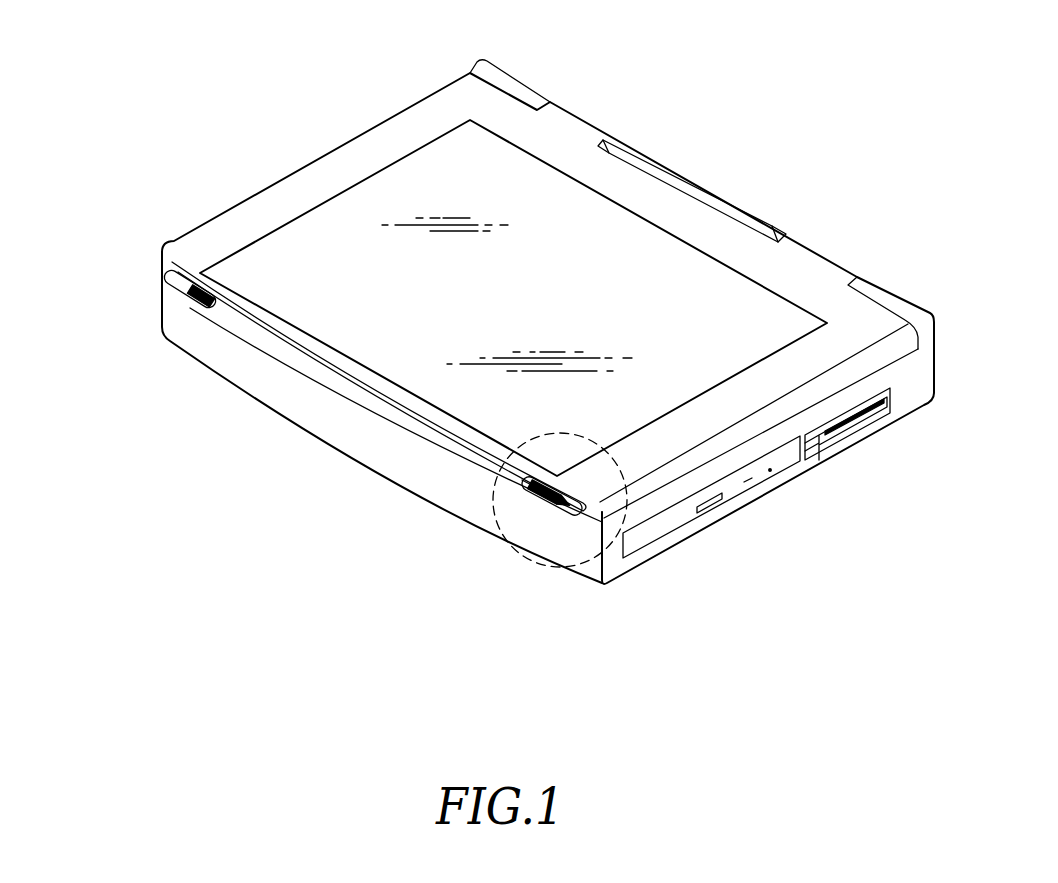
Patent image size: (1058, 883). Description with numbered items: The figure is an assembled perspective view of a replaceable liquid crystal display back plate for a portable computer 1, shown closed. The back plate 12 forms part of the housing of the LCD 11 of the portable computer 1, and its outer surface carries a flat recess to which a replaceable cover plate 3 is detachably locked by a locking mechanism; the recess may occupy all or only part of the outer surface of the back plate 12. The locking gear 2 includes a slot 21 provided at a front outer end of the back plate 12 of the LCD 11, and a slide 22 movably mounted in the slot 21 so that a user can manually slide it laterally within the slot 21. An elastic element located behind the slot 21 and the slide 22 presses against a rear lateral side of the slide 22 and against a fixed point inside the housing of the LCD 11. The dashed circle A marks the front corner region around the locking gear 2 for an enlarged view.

The portable computer 1 is at (275, 390).
The liquid crystal display 11 is at (387, 412).
The back plate 12 is at (574, 140).
The locking gear 2 is at (188, 304).
The slot 21 is at (602, 580).
The slide 22 is at (543, 498).
The replaceable cover plate 3 is at (327, 223).
The enlarged detail region A is at (493, 500).